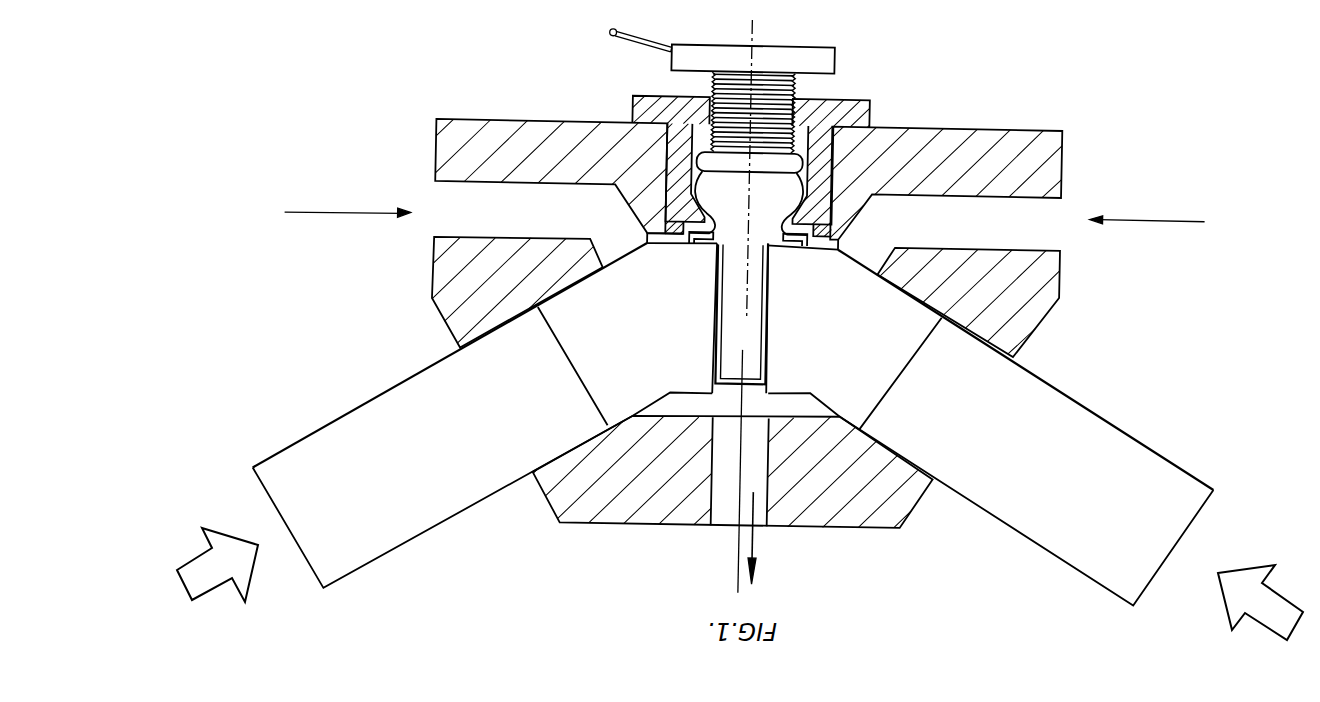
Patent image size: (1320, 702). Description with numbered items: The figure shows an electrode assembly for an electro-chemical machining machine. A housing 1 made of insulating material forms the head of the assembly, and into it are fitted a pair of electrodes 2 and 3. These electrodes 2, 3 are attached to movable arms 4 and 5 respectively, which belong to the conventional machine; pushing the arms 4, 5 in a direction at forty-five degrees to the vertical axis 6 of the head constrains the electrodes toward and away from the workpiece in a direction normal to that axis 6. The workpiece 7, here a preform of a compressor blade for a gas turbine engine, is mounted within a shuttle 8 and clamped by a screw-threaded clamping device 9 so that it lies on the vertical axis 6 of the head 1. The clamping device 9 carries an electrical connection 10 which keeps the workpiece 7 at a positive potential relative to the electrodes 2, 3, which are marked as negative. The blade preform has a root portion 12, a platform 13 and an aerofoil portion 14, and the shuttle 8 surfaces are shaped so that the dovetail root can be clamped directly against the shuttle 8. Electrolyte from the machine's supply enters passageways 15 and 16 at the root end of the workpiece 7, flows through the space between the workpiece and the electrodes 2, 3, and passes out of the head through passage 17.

The housing 1 is at (573, 528).
The electrode 2 is at (838, 322).
The electrode 3 is at (633, 316).
The movable arm 4 is at (1069, 468).
The movable arm 5 is at (383, 465).
The vertical axis 6 is at (743, 553).
The workpiece 7 is at (726, 360).
The shuttle 8 is at (833, 116).
The screw-threaded clamping device 9 is at (704, 91).
The electrical connection 10 is at (605, 39).
The root portion 12 is at (758, 185).
The platform 13 is at (794, 242).
The aerofoil portion 14 is at (761, 347).
The passageway 15 is at (443, 201).
The passageway 16 is at (1052, 212).
The passage 17 is at (767, 519).